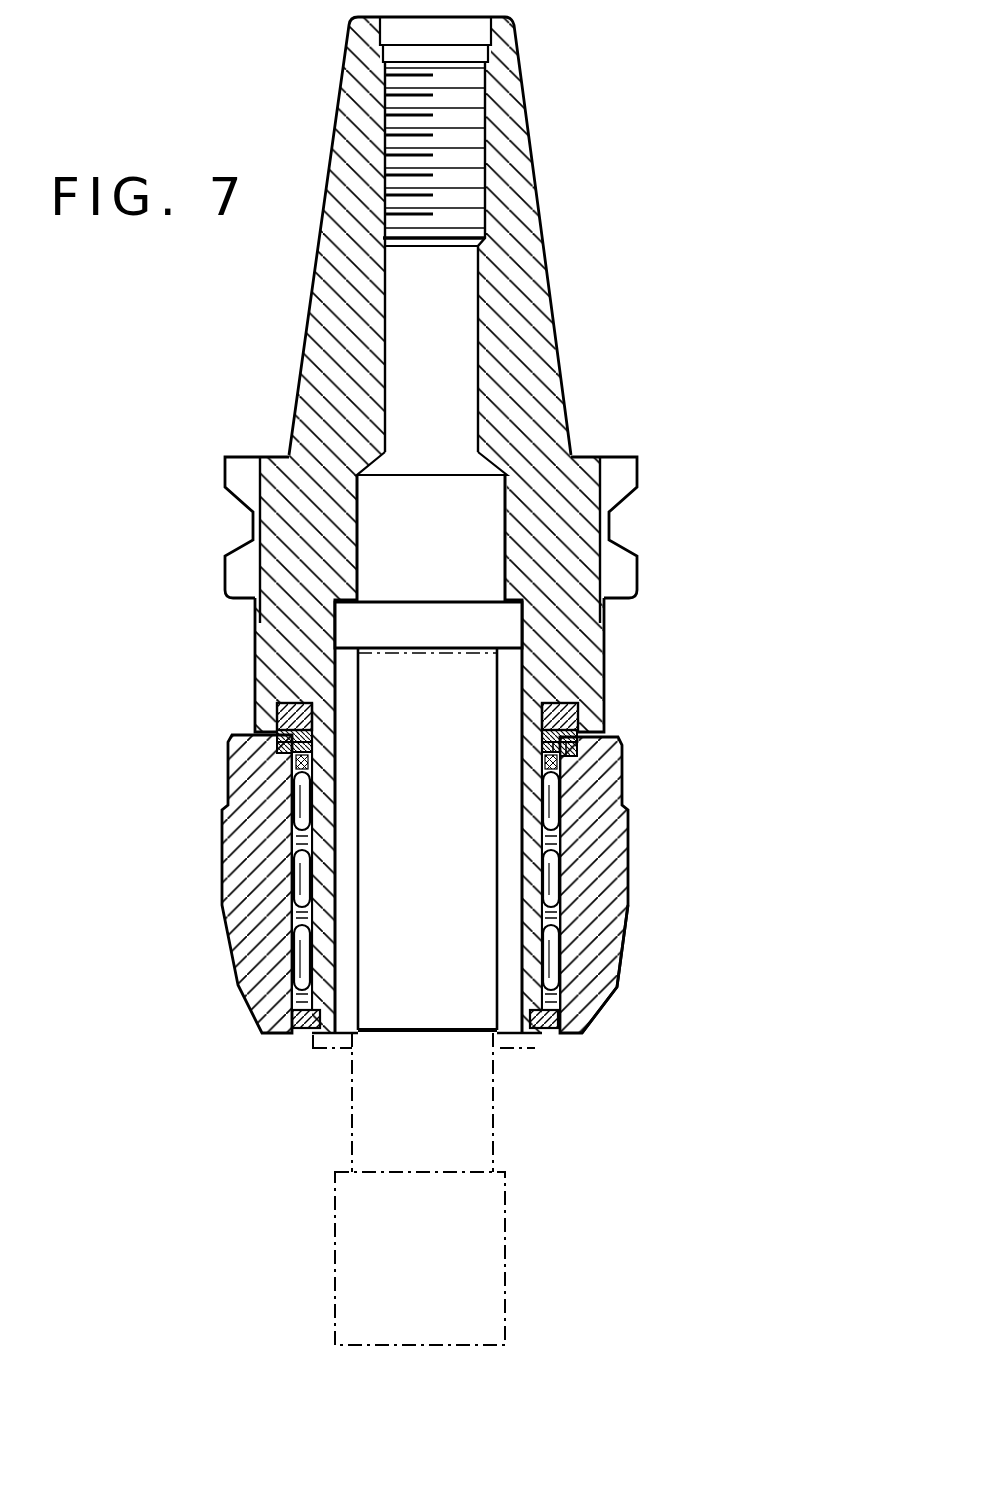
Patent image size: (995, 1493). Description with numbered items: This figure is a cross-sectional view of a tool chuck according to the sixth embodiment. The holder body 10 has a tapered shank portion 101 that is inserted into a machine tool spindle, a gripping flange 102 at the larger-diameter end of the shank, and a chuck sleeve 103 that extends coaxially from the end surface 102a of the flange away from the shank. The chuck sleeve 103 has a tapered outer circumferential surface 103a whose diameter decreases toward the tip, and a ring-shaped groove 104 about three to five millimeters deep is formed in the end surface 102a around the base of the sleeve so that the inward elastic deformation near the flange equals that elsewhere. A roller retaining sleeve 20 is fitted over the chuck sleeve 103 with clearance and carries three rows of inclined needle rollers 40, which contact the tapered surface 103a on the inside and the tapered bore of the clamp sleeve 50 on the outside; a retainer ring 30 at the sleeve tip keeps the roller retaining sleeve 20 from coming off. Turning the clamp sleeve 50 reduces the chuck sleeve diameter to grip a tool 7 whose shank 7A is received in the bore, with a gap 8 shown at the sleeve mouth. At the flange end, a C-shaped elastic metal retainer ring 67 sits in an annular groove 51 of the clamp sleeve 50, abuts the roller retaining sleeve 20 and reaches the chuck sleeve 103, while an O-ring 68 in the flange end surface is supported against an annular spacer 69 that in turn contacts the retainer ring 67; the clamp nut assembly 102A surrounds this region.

The holder body 10 is at (549, 256).
The tapered shank portion 101 is at (545, 383).
The gripping flange 102 is at (592, 548).
The end surface 102a is at (590, 730).
The nut 102A is at (242, 745).
The chuck sleeve 103 is at (560, 805).
The tapered outer circumferential surface 103a is at (550, 928).
The groove 104 is at (285, 701).
The O-ring 68 is at (280, 737).
The retainer ring 67 is at (563, 748).
The annular spacer 69 is at (560, 745).
The annular groove 51 is at (575, 749).
The roller retaining sleeve 20 is at (560, 815).
The needle rollers 40 is at (562, 950).
The clamp sleeve 50 is at (587, 990).
The retainer ring 30 is at (563, 1017).
The tool 7 is at (507, 1227).
The tool shank 7A is at (480, 1085).
The gap 8 is at (313, 1050).